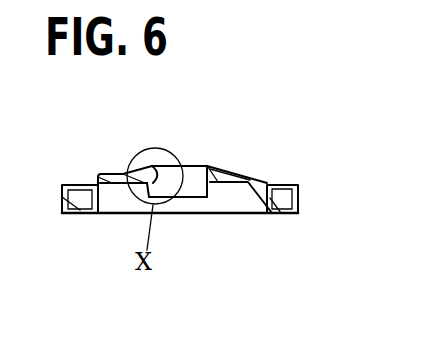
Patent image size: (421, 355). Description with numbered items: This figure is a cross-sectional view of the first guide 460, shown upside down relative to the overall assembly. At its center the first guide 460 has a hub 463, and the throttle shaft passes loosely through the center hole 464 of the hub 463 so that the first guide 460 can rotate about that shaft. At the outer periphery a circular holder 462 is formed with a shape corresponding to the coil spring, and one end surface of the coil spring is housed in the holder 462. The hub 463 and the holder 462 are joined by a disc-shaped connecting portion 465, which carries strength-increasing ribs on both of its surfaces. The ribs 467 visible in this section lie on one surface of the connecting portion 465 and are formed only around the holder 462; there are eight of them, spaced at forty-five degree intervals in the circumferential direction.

The first guide 460 is at (110, 213).
The holder 462 is at (280, 195).
The hub 463 is at (205, 166).
The center hole 464 is at (158, 168).
The connecting portion 465 is at (243, 170).
The ribs 467 is at (98, 173).